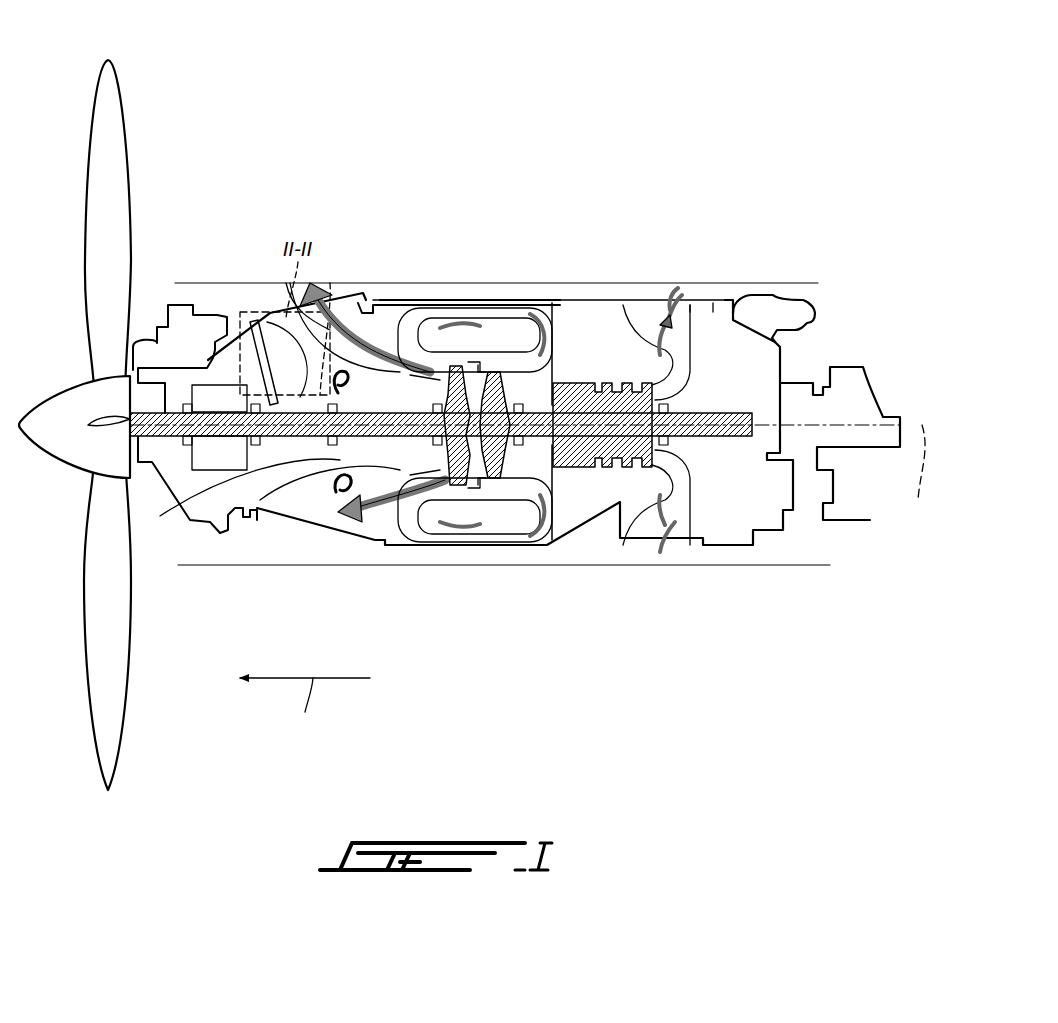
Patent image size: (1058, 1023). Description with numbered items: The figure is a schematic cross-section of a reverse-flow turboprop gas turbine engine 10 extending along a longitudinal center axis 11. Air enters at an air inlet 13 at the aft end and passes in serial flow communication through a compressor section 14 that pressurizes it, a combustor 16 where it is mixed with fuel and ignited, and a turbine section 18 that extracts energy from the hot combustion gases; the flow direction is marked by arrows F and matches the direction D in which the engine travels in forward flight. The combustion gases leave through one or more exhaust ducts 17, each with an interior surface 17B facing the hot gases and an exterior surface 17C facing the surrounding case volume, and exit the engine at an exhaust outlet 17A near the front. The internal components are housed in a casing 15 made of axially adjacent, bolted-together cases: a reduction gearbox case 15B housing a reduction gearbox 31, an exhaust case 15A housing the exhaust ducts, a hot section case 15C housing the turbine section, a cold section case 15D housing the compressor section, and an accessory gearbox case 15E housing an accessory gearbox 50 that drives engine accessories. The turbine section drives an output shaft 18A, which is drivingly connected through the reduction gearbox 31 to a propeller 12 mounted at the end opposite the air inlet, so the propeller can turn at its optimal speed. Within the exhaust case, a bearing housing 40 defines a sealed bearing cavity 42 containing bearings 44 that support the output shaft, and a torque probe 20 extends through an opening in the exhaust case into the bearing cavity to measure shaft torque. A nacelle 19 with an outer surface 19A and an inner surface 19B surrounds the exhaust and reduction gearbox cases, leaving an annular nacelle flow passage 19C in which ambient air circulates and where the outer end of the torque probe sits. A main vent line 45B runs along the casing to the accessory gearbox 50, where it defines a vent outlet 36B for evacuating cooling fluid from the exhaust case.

The gas turbine engine 10 is at (664, 164).
The longitudinal center axis 11 is at (916, 480).
The propeller 12 is at (128, 106).
The air inlet 13 is at (658, 570).
The compressor section 14 is at (596, 312).
The casing 15 is at (722, 297).
The exhaust case 15A is at (256, 522).
The reduction gearbox case 15B is at (198, 527).
The hot section case 15C is at (450, 547).
The cold section case 15D is at (590, 520).
The accessory gearbox case 15E is at (768, 547).
The combustor 16 is at (508, 306).
The exhaust duct 17 is at (348, 300).
The exhaust outlet 17A is at (322, 508).
The interior surface 17B is at (384, 540).
The exterior surface 17C is at (350, 360).
The turbine section 18 is at (398, 538).
The output shaft 18A is at (280, 442).
The nacelle 19 is at (462, 283).
The outer surface 19A is at (497, 283).
The inner surface 19B is at (812, 283).
The nacelle flow passage 19C is at (262, 302).
The torque probe 20 is at (249, 310).
The reduction gearbox 31 is at (217, 374).
The vent outlet 36B is at (713, 318).
The bearing housing 40 is at (258, 466).
The bearing cavity 42 is at (254, 452).
The bearings 44 is at (325, 300).
The main vent line 45B is at (676, 300).
The accessory gearbox 50 is at (820, 380).
The direction of forward flight D is at (305, 714).
The flow of gases arrows F is at (558, 302).